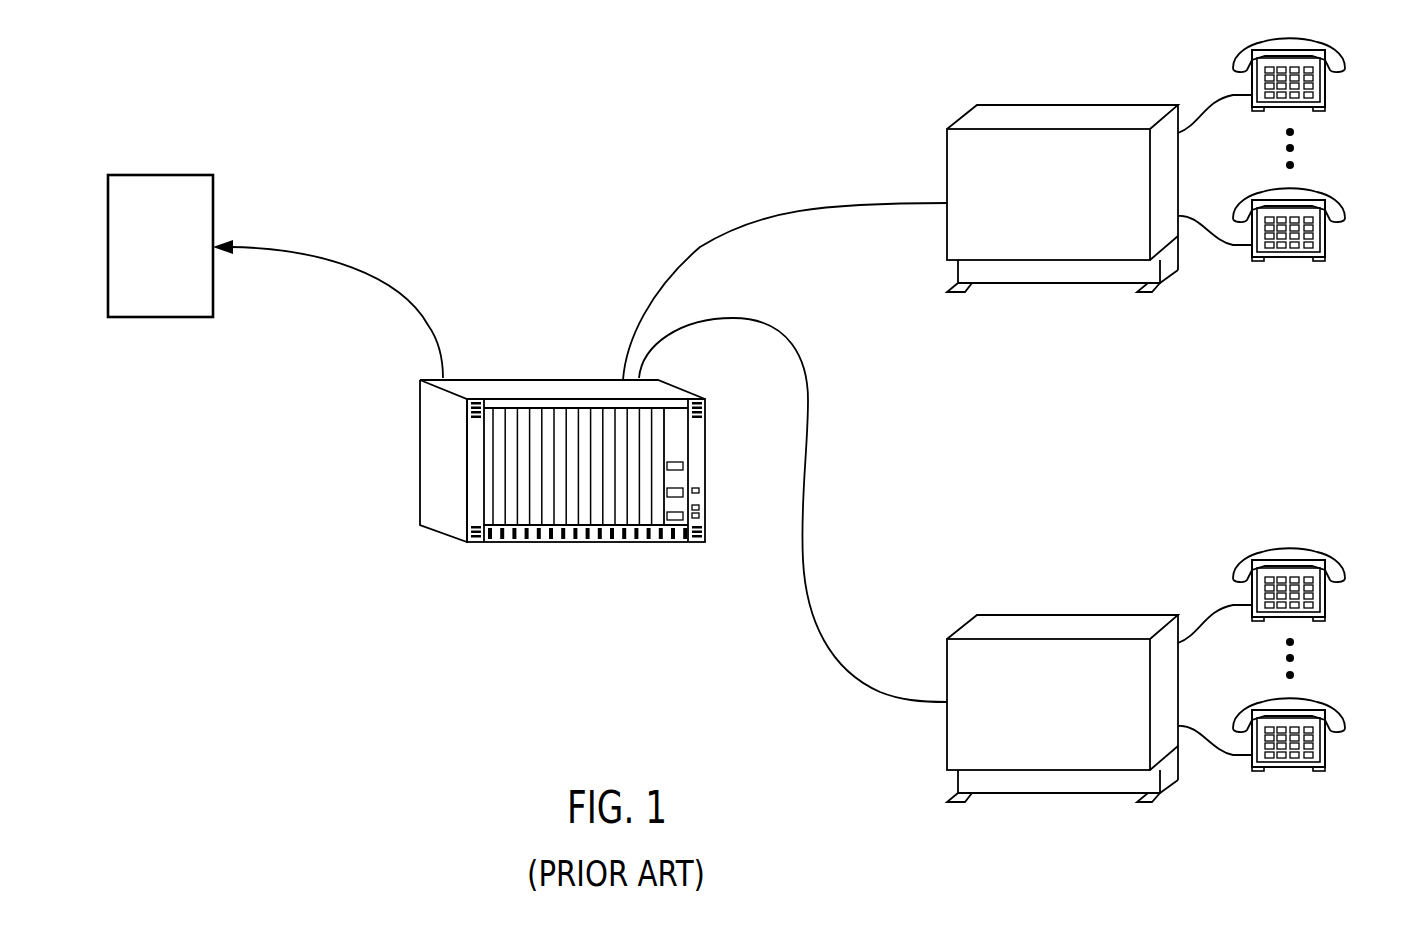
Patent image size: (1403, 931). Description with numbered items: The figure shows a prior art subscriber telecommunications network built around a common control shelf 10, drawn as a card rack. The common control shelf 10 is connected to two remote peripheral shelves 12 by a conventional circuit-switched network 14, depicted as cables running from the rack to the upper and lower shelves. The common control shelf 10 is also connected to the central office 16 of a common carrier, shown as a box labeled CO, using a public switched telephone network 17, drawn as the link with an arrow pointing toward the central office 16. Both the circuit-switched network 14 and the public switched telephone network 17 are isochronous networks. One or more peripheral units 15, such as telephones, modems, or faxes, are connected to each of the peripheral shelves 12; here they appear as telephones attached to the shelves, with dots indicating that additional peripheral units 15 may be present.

The common control shelf 10 is at (470, 543).
The remote peripheral shelves 12 is at (1120, 391).
The circuit-switched network 14 is at (796, 205).
The peripheral units 15 is at (1325, 92).
The central office 16 is at (161, 175).
The public switched telephone network 17 is at (363, 267).